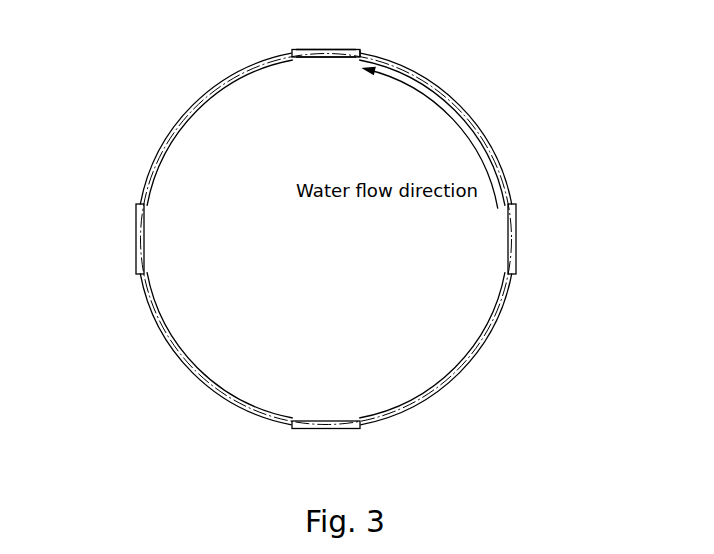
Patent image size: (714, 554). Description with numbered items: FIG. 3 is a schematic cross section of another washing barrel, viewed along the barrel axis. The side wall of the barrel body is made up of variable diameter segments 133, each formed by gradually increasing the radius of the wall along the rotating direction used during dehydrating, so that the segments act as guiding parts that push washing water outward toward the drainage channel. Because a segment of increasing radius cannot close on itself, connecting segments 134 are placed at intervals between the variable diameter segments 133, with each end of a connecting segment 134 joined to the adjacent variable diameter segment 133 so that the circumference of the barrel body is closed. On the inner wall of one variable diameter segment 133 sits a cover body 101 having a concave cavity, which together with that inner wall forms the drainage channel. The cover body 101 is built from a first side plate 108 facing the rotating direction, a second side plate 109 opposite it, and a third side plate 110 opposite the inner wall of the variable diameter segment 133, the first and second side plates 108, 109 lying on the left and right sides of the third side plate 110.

The cover body 101 is at (328, 65).
The first side plate 108 is at (359, 57).
The second side plate 109 is at (310, 50).
The third side plate 110 is at (325, 58).
The variable diameter segment 133 is at (198, 100).
The connecting segment 134 is at (296, 52).